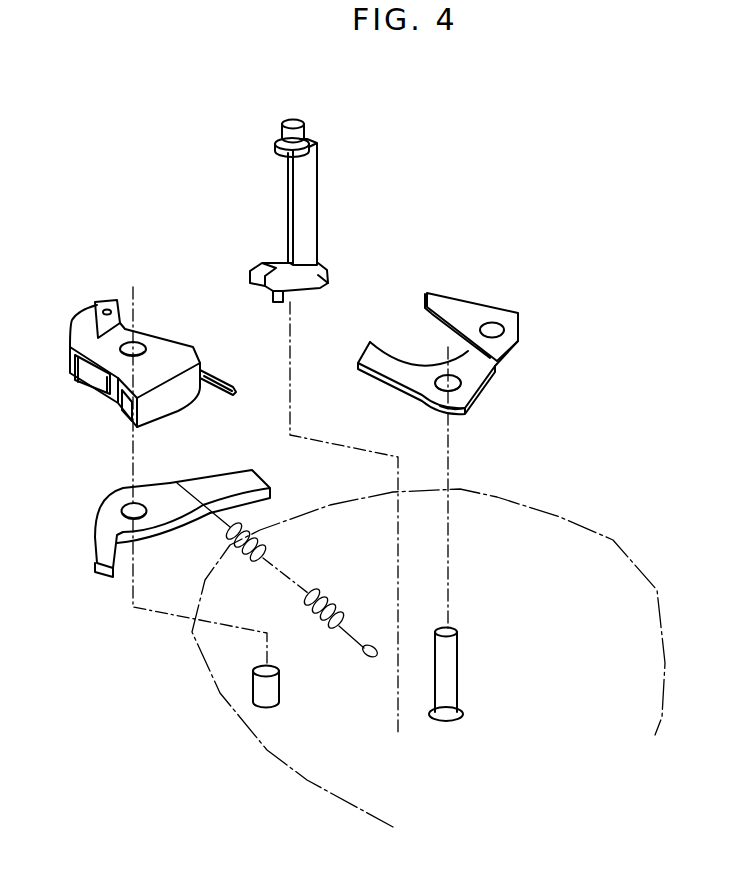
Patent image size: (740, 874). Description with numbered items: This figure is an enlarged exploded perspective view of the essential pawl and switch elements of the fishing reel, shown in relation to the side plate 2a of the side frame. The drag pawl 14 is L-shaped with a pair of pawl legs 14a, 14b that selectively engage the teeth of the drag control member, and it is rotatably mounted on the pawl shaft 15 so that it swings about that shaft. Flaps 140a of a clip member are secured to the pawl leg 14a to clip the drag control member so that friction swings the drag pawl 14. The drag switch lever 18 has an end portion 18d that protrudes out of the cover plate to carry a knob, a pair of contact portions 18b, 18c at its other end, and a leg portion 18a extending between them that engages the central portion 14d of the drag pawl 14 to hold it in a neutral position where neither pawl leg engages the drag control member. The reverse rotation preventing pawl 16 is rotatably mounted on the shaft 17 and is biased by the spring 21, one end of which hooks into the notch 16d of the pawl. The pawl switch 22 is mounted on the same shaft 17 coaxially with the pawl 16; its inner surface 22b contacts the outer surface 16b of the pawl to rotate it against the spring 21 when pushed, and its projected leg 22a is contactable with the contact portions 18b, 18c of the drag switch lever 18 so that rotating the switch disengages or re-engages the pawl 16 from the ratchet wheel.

The side plate 2a is at (540, 545).
The drag pawl 14 is at (456, 354).
The pawl leg 14a is at (498, 305).
The pawl leg 14b is at (393, 360).
The central portion of the drag pawl 14d is at (453, 410).
The flap of the clip member 140a is at (427, 305).
The pawl shaft 15 is at (458, 673).
The reverse rotation preventing pawl 16 is at (168, 516).
The outer surface of the pawl 16b is at (97, 547).
The notch 16d is at (172, 485).
The shaft 17 is at (278, 687).
The drag switch lever 18 is at (308, 219).
The leg portion 18a is at (307, 218).
The contact portion 18b is at (280, 283).
The contact portion 18c is at (257, 263).
The end portion 18d is at (287, 123).
The spring 21 is at (313, 593).
The pawl switch 22 is at (165, 351).
The projected leg 22a is at (212, 384).
The inner surface of the switch 22b is at (193, 398).